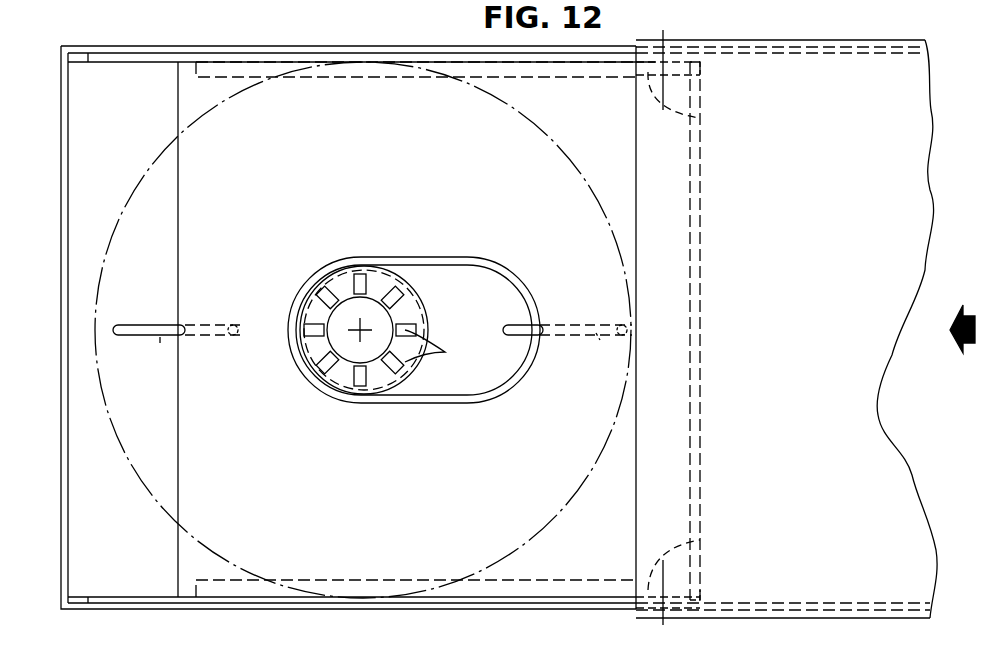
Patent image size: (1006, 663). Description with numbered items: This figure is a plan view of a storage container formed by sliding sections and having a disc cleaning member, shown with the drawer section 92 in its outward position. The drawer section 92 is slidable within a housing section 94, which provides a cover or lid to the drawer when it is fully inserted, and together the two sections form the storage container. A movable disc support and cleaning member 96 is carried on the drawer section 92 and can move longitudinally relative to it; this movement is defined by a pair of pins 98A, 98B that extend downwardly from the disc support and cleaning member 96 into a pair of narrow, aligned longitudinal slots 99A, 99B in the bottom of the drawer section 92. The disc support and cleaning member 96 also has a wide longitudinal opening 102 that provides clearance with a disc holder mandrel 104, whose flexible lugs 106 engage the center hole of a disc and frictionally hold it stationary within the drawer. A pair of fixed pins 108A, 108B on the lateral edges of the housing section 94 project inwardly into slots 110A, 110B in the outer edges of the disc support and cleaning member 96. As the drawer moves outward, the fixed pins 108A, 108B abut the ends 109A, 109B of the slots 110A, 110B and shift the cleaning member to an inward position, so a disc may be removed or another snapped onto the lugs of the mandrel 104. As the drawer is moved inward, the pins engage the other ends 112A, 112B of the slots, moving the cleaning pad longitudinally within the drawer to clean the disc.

The drawer section 92 is at (150, 46).
The housing section 94 is at (758, 16).
The disc support and cleaning member 96 is at (178, 112).
The pin 98A is at (621, 323).
The pin 98B is at (245, 322).
The longitudinal slot 99A is at (596, 337).
The longitudinal slot 99B is at (160, 337).
The wide longitudinal opening 102 is at (452, 272).
The disc holder mandrel 104 is at (378, 320).
The flexible lugs 106 is at (446, 350).
The fixed pin 108A is at (700, 74).
The fixed pin 108B is at (704, 580).
The slot end 109A is at (702, 64).
The slot end 109B is at (712, 562).
The slot 110A is at (705, 125).
The slot 110B is at (718, 540).
The other slot end 112A is at (216, 58).
The other slot end 112B is at (222, 577).